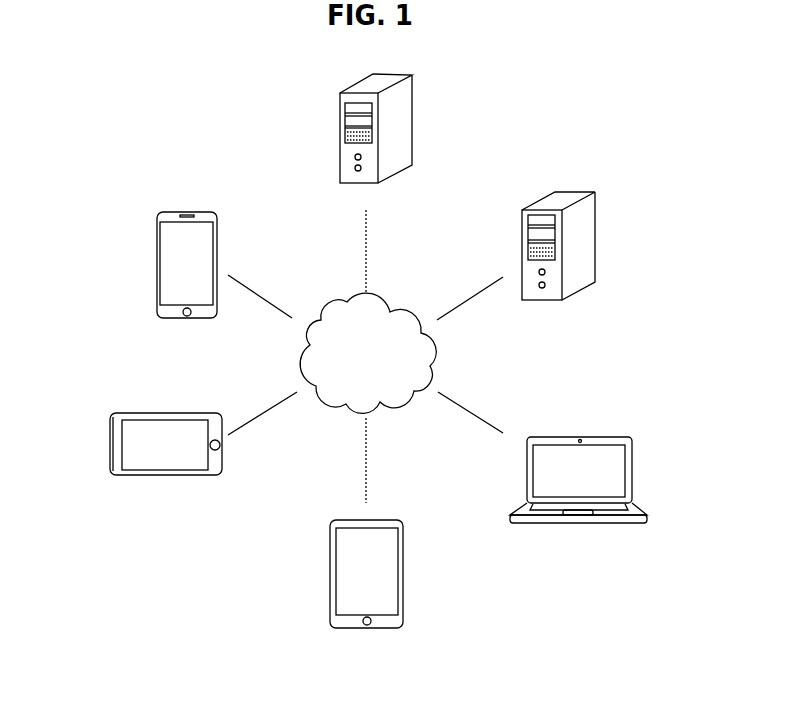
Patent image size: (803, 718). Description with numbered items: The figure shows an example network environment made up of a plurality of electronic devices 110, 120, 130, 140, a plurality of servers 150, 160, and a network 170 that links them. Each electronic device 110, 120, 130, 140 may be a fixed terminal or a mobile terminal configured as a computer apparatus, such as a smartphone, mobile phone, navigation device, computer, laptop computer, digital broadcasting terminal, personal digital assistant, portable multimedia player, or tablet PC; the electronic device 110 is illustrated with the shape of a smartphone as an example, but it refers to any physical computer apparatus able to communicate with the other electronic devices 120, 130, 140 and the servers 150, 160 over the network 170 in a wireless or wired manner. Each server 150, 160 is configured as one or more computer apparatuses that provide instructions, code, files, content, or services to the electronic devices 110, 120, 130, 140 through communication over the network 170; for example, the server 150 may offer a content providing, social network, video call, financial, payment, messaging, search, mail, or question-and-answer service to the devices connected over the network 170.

The electronic device 110 is at (153, 267).
The electronic device 120 is at (108, 443).
The electronic device 130 is at (407, 573).
The electronic device 140 is at (633, 470).
The server 150 is at (595, 233).
The server 160 is at (413, 117).
The network 170 is at (390, 312).